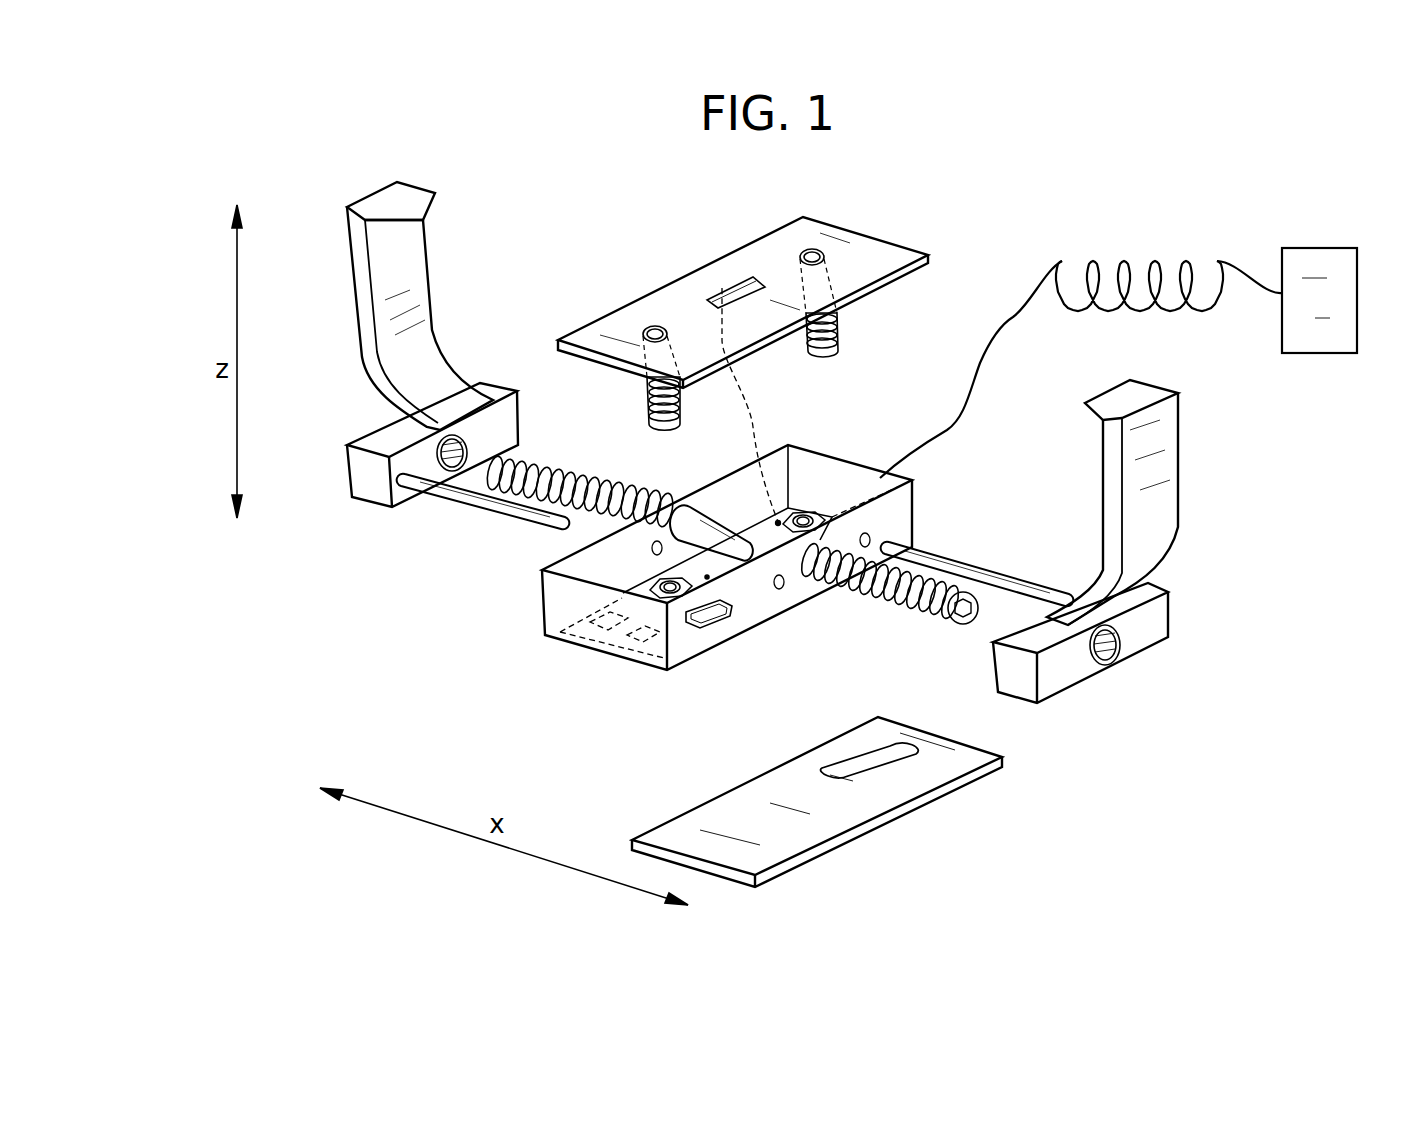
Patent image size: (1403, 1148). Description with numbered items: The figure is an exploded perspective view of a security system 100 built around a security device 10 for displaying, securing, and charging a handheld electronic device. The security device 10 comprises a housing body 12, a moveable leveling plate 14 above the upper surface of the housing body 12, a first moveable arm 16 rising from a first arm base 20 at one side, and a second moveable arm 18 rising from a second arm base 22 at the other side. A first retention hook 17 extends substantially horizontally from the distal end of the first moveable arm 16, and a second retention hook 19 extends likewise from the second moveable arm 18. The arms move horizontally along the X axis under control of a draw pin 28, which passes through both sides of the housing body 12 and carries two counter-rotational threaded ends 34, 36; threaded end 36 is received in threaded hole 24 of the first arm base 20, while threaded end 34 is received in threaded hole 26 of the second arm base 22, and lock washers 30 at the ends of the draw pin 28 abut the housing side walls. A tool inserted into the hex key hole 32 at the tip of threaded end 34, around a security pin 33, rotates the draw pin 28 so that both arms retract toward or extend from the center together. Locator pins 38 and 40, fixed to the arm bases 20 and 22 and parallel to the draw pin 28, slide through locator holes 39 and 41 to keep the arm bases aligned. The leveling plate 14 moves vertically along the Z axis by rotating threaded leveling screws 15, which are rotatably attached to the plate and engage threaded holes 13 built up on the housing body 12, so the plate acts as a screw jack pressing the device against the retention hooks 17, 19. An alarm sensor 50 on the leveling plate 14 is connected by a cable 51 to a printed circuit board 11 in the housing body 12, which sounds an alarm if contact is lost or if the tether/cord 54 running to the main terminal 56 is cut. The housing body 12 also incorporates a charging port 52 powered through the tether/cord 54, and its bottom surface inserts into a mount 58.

The security device 10 is at (362, 635).
The security system 100 is at (947, 203).
The printed circuit board 11 is at (593, 650).
The housing body 12 is at (543, 617).
The threaded holes 13 is at (812, 512).
The leveling plate 14 is at (777, 250).
The threaded leveling screws 15 is at (838, 325).
The first moveable arm 16 is at (359, 325).
The first retention hook 17 is at (423, 220).
The second moveable arm 18 is at (1165, 465).
The second retention hook 19 is at (1090, 412).
The first arm base 20 is at (350, 487).
The second arm base 22 is at (1013, 698).
The threaded hole 24 is at (468, 445).
The threaded hole 26 is at (1119, 660).
The draw pin 28 is at (738, 552).
The lock washers 30 is at (785, 589).
The hex key hole 32 is at (980, 600).
The security pin 33 is at (962, 627).
The threaded end 34 is at (878, 611).
The threaded end 36 is at (607, 483).
The locator pin 38 is at (497, 503).
The locator hole 39 is at (650, 550).
The locator pin 40 is at (950, 563).
The locator hole 41 is at (867, 531).
The alarm sensor 50 is at (722, 288).
The cable 51 is at (748, 407).
The charging port 52 is at (703, 632).
The tether/cord 54 is at (1032, 303).
The main terminal 56 is at (1320, 248).
The mount 58 is at (982, 745).